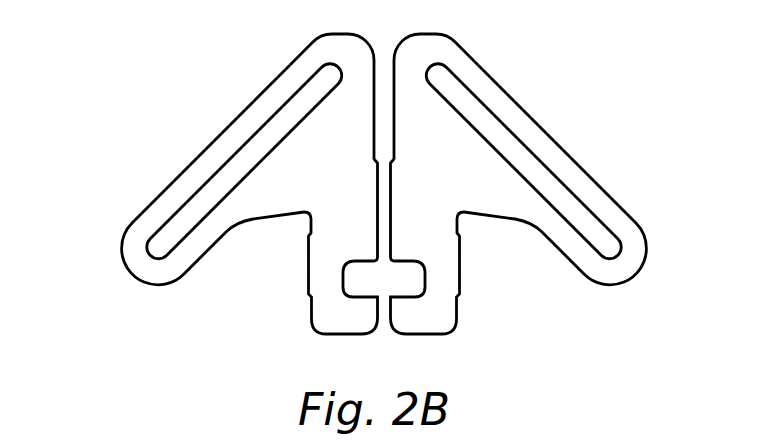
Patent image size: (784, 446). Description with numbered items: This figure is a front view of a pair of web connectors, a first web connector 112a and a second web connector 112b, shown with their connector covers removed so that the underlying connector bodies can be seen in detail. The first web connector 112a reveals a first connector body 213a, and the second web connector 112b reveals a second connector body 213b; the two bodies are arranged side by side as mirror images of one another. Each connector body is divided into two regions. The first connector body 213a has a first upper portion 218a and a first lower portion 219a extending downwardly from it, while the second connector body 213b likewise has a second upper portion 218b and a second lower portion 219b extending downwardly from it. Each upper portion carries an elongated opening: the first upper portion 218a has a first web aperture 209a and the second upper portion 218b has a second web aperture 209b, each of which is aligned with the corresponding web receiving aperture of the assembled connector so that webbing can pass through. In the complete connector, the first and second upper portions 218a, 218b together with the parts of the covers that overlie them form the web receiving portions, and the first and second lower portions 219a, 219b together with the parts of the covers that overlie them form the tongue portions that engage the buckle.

The first web connector 112a is at (141, 64).
The second web connector 112b is at (588, 78).
The first connector body 213a is at (298, 67).
The second connector body 213b is at (464, 64).
The first web aperture 209a is at (247, 150).
The second web aperture 209b is at (521, 151).
The first upper portion 218a is at (181, 176).
The second upper portion 218b is at (581, 183).
The first lower portion 219a is at (312, 270).
The second lower portion 219b is at (447, 270).